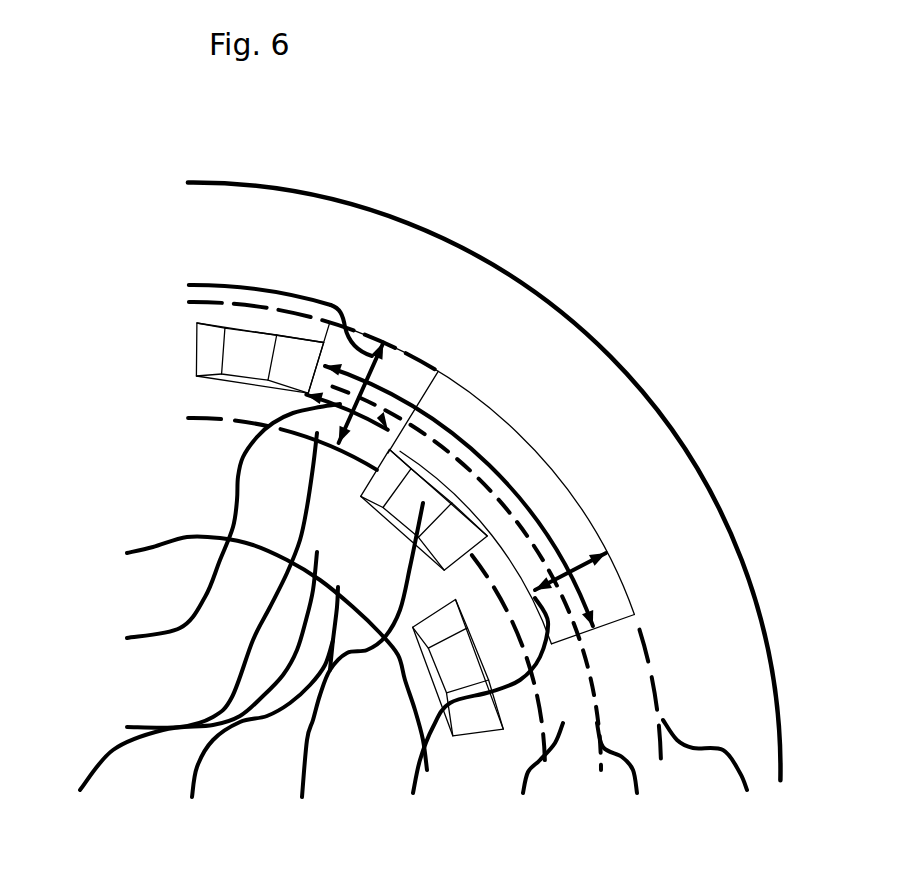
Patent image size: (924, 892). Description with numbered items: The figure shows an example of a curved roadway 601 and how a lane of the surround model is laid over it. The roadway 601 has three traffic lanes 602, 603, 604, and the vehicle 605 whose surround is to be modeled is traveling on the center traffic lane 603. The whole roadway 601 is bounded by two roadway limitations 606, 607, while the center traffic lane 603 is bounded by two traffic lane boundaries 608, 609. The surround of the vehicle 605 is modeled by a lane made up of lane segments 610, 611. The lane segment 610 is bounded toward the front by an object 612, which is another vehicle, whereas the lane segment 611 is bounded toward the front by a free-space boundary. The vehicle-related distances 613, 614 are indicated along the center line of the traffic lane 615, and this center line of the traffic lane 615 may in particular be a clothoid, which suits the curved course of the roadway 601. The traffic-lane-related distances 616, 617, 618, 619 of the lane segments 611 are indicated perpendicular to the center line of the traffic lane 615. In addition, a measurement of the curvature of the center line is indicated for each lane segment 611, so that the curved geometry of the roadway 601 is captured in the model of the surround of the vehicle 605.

The curved roadway 601 is at (730, 318).
The traffic lane 602 is at (623, 458).
The center traffic lane 603 is at (533, 784).
The traffic lane 604 is at (187, 698).
The vehicle 605 is at (250, 358).
The roadway limitation 606 is at (640, 390).
The roadway limitation 607 is at (250, 742).
The traffic lane boundary 608 is at (722, 782).
The traffic lane boundary 609 is at (218, 423).
The lane segment 610 is at (186, 588).
The lane segment 611 is at (550, 502).
The object 612 is at (350, 674).
The vehicle-related distance 613 is at (590, 601).
The vehicle-related distance 614 is at (241, 652).
The center line of the traffic lane 615 is at (633, 784).
The traffic-lane-related distance 616 is at (189, 285).
The traffic-lane-related distance 617 is at (197, 530).
The traffic-lane-related distance 618 is at (607, 565).
The traffic-lane-related distance 619 is at (469, 721).